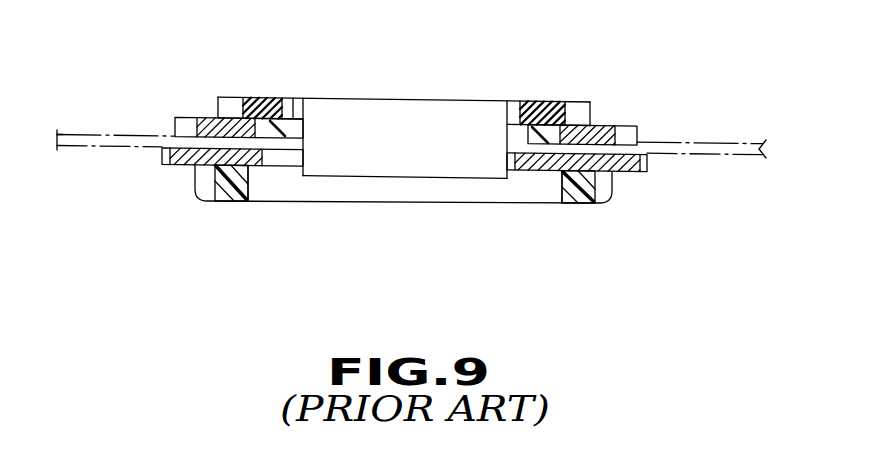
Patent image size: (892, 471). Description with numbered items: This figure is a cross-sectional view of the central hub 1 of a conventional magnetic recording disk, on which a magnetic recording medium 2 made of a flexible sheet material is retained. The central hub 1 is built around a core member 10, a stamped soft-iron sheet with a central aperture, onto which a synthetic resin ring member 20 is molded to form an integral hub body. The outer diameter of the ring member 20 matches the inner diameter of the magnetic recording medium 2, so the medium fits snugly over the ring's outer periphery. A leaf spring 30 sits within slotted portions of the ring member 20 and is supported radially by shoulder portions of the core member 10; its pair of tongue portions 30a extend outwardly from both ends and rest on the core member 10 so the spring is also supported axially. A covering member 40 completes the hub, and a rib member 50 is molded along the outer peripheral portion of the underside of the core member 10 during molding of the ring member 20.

The central hub 1 is at (402, 218).
The magnetic recording medium 2 is at (688, 140).
The core member 10 is at (627, 169).
The ring member 20 is at (285, 92).
The leaf spring 30 is at (437, 112).
The tongue portion 30a is at (287, 168).
The covering member 40 is at (251, 92).
The rib member 50 is at (231, 203).